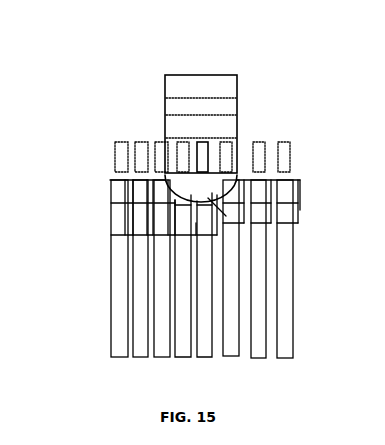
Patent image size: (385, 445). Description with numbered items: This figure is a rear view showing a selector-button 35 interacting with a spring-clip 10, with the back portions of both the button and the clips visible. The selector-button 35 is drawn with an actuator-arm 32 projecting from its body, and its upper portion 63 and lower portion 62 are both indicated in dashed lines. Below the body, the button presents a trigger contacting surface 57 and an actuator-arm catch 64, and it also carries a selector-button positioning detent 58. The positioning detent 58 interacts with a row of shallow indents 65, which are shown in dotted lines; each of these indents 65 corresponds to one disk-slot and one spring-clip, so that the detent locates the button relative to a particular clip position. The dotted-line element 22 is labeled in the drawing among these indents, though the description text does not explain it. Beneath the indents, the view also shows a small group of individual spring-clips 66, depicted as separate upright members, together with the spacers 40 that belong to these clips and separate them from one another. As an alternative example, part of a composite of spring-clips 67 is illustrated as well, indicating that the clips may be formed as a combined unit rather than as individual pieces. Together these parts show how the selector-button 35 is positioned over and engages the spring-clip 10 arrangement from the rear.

The selector-button 35 is at (237, 75).
The upper portion 63 is at (165, 86).
The lower portion 62 is at (165, 119).
The selector-button positioning detent 58 is at (206, 143).
The actuator-arm catch 64 is at (180, 203).
The optical fiber ends 22 is at (166, 203).
The actuator-arm 32 is at (218, 148).
The shallow indents 65 is at (115, 158).
The spring-clip 10 is at (285, 180).
The individual spring-clips 66 is at (258, 335).
The spacers 40 is at (242, 212).
The composite of spring-clips 67 is at (160, 211).
The trigger contacting surface 57 is at (226, 216).